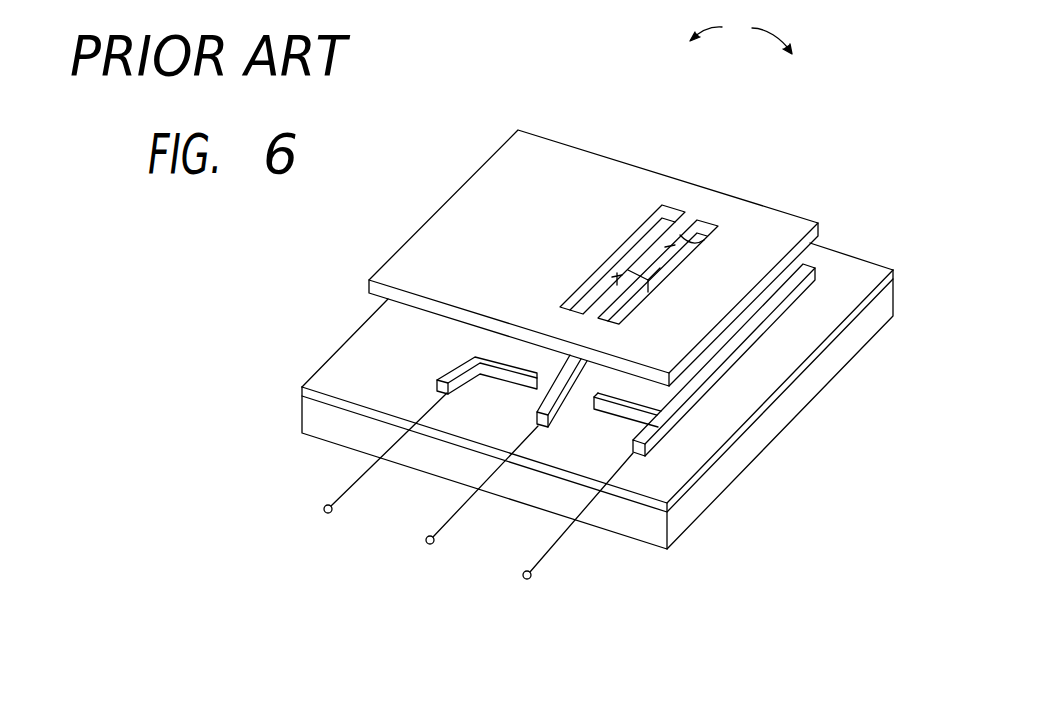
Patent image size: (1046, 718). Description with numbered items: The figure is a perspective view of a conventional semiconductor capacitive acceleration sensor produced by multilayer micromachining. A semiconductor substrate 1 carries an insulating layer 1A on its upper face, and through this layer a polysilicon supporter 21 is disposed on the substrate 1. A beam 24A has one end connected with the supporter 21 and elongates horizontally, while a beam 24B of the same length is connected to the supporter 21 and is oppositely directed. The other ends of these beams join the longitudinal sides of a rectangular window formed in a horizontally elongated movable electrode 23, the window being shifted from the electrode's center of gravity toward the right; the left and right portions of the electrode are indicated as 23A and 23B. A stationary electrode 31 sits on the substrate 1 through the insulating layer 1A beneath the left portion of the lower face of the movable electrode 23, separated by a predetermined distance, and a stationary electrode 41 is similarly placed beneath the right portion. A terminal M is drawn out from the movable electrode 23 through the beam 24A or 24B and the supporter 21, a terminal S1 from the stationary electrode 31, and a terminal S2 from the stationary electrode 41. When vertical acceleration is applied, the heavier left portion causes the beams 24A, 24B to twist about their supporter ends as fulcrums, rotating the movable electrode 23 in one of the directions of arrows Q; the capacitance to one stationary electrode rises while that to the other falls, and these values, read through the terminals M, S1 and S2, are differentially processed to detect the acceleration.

The semiconductor substrate 1 is at (887, 308).
The insulating layer 1A is at (873, 282).
The supporter 21 is at (643, 263).
The movable electrode 23 is at (543, 158).
The plate portion 23A is at (597, 175).
The plate portion 23B is at (787, 226).
The beam 24A is at (695, 250).
The beam 24B is at (569, 413).
The stationary electrode 31 is at (513, 348).
The stationary electrode 41 is at (680, 393).
The terminal S1 is at (369, 471).
The terminal S2 is at (562, 531).
The terminal M is at (469, 497).
The arrows Q is at (741, 32).